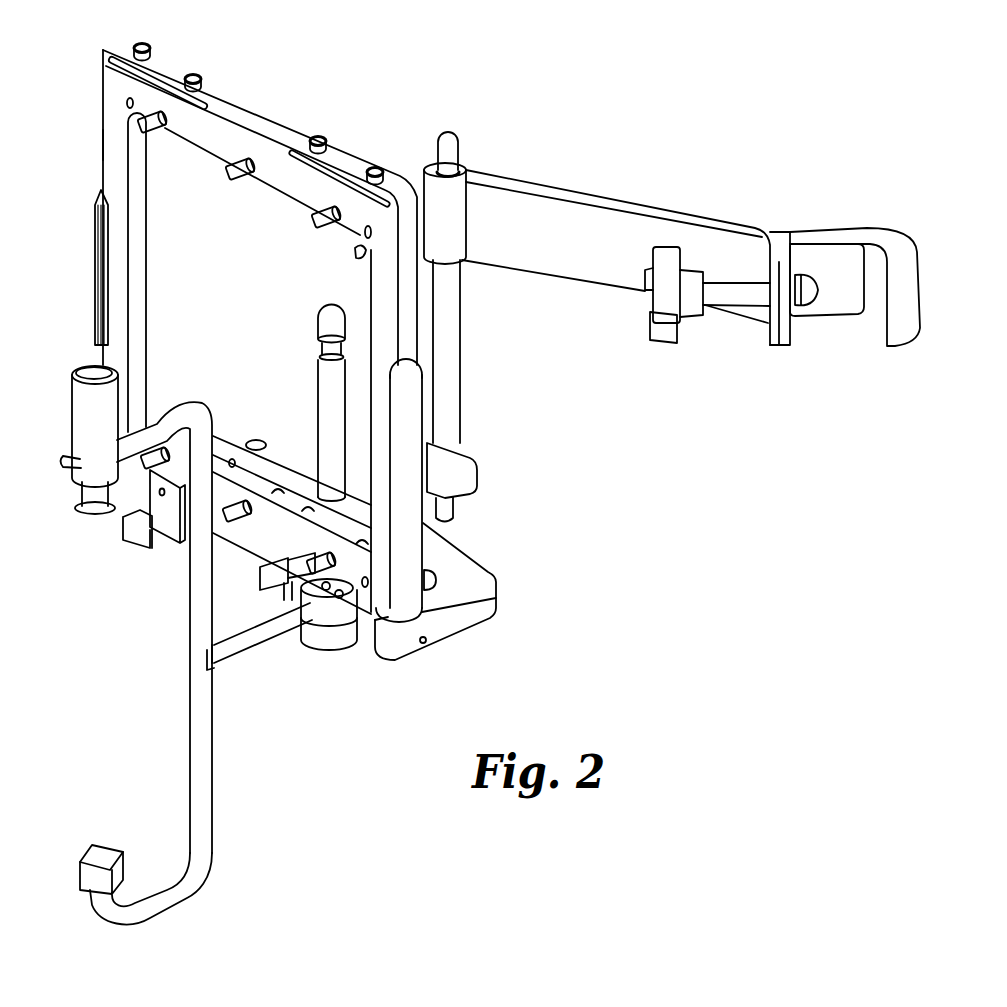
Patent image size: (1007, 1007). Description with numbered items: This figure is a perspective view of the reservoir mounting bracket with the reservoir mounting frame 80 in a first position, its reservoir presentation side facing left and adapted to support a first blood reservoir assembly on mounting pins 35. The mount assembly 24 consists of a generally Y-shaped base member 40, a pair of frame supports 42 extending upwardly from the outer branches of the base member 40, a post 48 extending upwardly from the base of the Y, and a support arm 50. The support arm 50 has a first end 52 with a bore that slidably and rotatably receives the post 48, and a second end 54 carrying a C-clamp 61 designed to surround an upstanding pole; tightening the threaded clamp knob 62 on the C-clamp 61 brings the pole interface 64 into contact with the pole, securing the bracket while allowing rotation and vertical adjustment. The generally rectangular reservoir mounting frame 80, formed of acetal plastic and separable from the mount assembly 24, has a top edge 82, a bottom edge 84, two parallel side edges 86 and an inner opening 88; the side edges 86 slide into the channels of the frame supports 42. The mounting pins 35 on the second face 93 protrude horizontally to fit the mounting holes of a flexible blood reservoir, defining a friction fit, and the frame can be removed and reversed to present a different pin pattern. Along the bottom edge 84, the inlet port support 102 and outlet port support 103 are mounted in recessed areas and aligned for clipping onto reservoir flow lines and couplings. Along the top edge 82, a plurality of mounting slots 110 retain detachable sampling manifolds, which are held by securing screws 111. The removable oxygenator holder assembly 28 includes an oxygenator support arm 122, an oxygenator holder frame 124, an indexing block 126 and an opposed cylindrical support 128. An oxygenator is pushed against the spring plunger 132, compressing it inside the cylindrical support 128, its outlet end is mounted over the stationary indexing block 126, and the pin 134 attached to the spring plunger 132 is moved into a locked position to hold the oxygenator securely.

The mount assembly 24 is at (484, 632).
The removable oxygenator holder assembly 28 is at (340, 662).
The mounting pins 35 is at (158, 128).
The base member 40 is at (468, 562).
The frame supports 42 is at (95, 275).
The post 48 is at (450, 368).
The support arm 50 is at (628, 198).
The first end 52 is at (478, 168).
The second end 54 is at (767, 230).
The C-clamp 61 is at (858, 228).
The threaded clamp knob 62 is at (648, 306).
The pole interface 64 is at (818, 292).
The reservoir mounting frame 80 is at (102, 86).
The top edge 82 is at (225, 116).
The bottom edge 84 is at (247, 540).
The side edges 86 is at (108, 192).
The inner opening 88 is at (180, 333).
The second face 93 is at (113, 143).
The inlet port support 102 is at (145, 550).
The outlet port support 103 is at (300, 600).
The mounting slots 110 is at (112, 50).
The securing screws 111 is at (193, 70).
The oxygenator support arm 122 is at (233, 655).
The oxygenator holder frame 124 is at (205, 772).
The indexing block 126 is at (98, 848).
The cylindrical support 128 is at (88, 370).
The spring plunger 132 is at (79, 512).
The pin 134 is at (67, 458).